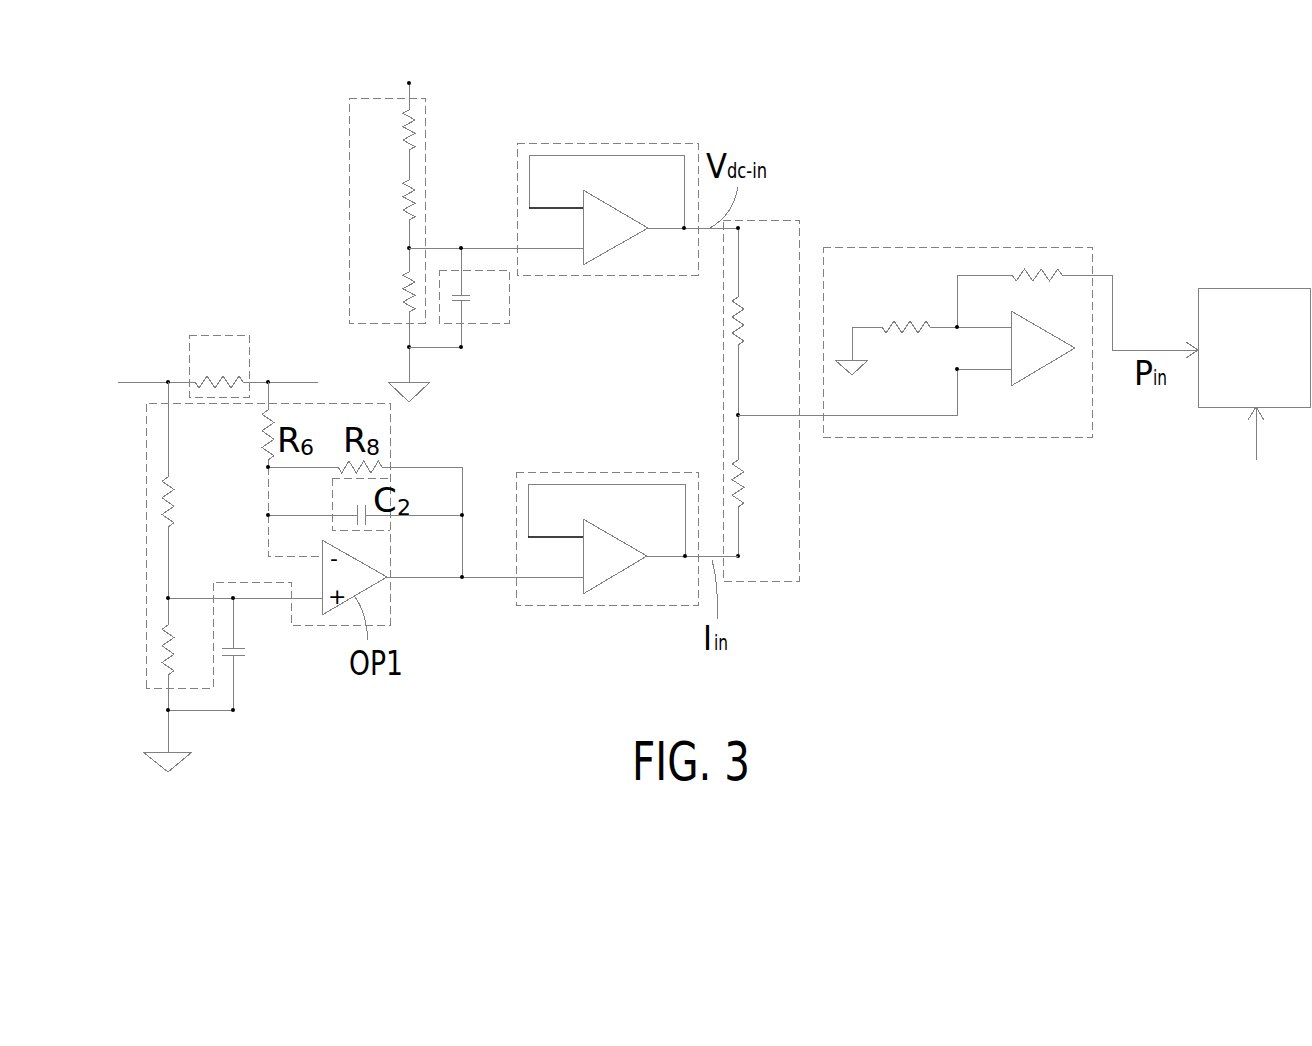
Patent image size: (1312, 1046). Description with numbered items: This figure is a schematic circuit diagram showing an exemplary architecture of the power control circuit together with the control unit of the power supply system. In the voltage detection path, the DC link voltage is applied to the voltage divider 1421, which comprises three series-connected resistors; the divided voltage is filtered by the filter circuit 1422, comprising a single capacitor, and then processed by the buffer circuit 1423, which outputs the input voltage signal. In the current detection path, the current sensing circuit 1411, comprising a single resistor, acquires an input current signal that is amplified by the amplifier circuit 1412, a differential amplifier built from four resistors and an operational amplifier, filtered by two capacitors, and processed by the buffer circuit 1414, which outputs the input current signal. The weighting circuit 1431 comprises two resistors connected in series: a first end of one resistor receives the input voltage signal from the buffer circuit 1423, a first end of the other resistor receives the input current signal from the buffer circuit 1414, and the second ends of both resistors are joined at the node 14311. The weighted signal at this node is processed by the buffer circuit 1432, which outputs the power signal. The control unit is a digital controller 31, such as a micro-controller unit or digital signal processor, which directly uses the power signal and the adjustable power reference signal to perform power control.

The current sensing circuit 1411 is at (220, 333).
The amplifier circuit 1412 is at (146, 450).
The buffer circuit 1414 is at (608, 470).
The voltage divider 1421 is at (348, 152).
The filter circuit 1422 is at (484, 324).
The buffer circuit 1423 is at (608, 142).
The weighting circuit 1431 is at (763, 219).
The node 14311 is at (738, 415).
The buffer circuit 1432 is at (955, 248).
The digital controller 31 is at (1247, 288).